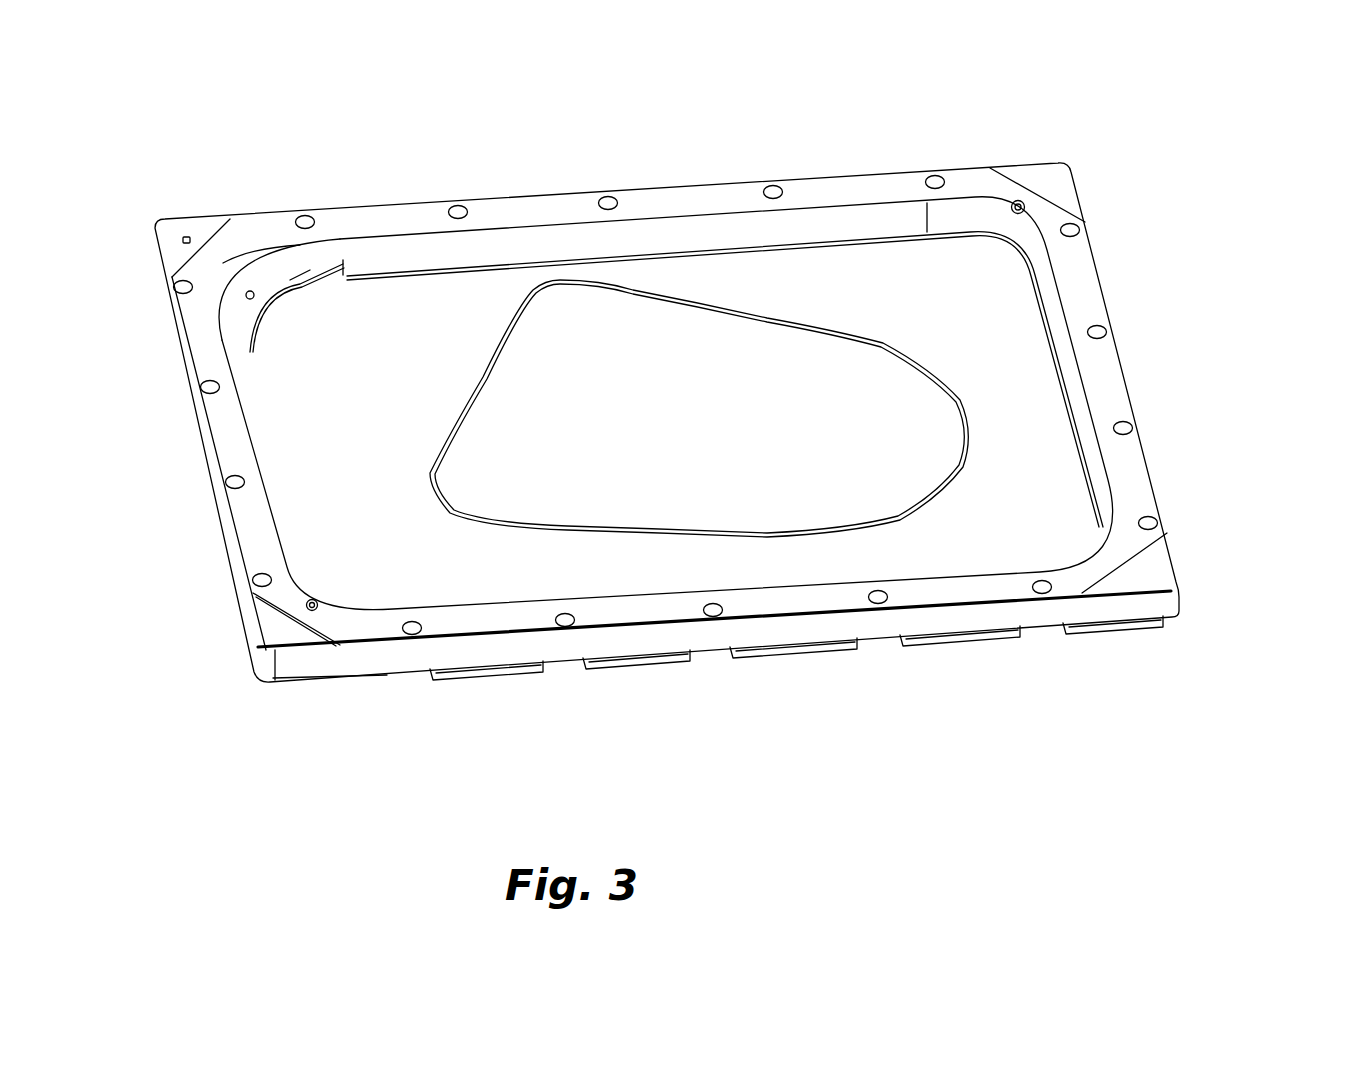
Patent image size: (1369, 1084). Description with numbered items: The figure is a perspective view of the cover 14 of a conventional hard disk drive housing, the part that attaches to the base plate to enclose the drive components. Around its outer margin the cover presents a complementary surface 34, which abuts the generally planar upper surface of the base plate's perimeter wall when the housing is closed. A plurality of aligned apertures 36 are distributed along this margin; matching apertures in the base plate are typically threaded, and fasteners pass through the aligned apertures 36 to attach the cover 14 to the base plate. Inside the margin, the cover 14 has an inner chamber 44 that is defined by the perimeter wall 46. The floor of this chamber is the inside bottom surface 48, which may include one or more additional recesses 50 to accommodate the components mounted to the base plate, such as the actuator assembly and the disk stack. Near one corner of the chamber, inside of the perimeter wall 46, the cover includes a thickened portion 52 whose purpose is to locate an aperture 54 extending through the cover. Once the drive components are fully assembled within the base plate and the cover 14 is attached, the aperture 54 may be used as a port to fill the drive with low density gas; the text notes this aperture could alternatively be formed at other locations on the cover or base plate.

The cover 14 is at (1175, 368).
The complementary surface 34 is at (872, 190).
The aligned apertures 36 is at (462, 208).
The inner chamber 44 is at (975, 288).
The perimeter wall 46 is at (570, 195).
The inside bottom surface 48 is at (348, 418).
The recess 50 is at (689, 456).
The thickened portion 52 is at (325, 243).
The aperture 54 is at (249, 292).